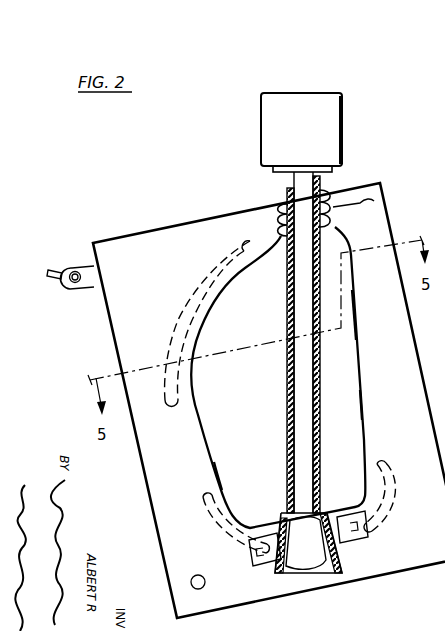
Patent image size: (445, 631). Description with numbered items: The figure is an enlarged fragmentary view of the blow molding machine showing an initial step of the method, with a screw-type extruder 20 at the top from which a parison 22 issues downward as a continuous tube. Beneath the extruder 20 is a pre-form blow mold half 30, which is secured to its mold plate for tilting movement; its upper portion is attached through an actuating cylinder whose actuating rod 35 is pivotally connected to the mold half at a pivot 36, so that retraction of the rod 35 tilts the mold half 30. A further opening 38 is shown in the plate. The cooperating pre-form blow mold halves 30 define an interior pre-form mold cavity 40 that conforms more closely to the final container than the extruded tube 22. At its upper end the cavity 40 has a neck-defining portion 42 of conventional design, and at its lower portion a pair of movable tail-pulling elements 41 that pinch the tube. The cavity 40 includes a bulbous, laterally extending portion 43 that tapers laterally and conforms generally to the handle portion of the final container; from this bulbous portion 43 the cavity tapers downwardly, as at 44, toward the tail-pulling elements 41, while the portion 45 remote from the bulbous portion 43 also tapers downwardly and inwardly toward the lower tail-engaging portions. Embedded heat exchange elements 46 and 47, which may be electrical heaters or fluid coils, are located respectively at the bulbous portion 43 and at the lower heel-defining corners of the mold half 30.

The screw-type extruder 20 is at (350, 125).
The parison 22 is at (320, 188).
The pre-form blow mold half 30 is at (133, 231).
The actuating rod 35 is at (54, 279).
The pivotal connection of actuating rod 36 is at (74, 271).
The mounting hole 38 is at (200, 589).
The pre-form mold cavity 40 is at (356, 396).
The tail-pulling elements 41 is at (362, 538).
The neck-defining portion 42 is at (374, 201).
The bulbous laterally extending portion 43 is at (208, 308).
The downwardly tapering cavity portion 44 is at (220, 455).
The remote tapering cavity portion 45 is at (358, 348).
The heat exchange element 46 is at (189, 283).
The heat exchange element 47 is at (389, 503).